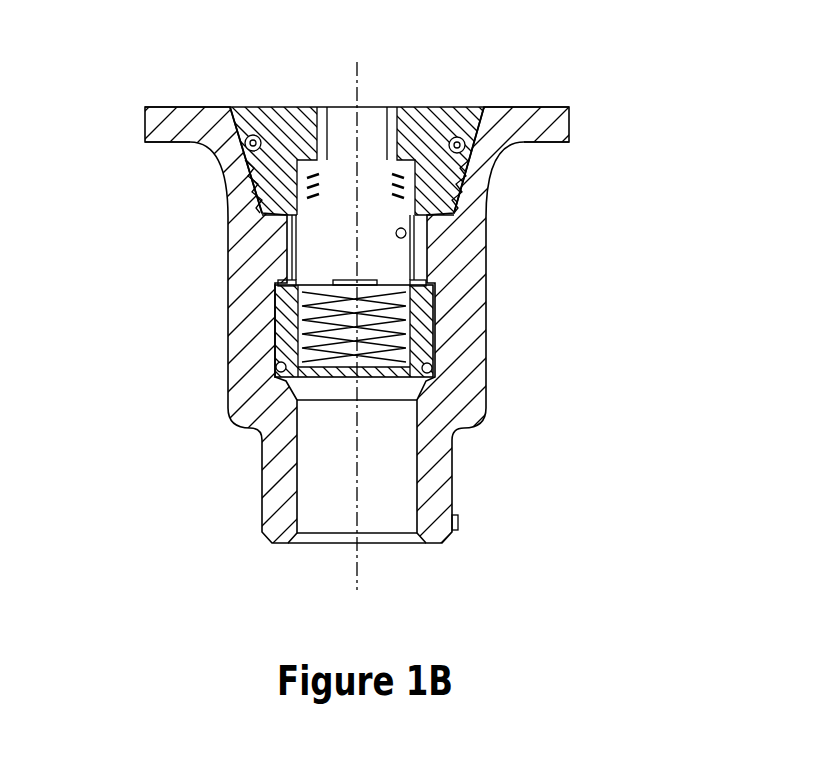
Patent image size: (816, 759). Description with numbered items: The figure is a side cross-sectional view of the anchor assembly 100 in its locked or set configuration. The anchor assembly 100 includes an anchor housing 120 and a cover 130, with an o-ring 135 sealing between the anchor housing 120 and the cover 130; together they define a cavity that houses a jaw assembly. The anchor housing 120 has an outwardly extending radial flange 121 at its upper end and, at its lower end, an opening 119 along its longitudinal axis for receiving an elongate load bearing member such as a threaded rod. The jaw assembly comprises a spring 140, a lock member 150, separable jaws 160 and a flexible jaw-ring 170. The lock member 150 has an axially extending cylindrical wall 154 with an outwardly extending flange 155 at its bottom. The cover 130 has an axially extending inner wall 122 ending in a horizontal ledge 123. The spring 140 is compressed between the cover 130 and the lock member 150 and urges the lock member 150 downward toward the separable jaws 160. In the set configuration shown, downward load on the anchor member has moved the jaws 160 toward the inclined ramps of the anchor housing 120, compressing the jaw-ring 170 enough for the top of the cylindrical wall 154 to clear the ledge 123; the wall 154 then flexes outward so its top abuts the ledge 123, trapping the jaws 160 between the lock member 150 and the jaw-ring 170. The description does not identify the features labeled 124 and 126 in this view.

The anchor assembly 100 is at (620, 113).
The opening 119 is at (383, 545).
The anchor housing 120 is at (470, 410).
The radial flange 121 is at (155, 125).
The inner wall 122 is at (313, 140).
The ledge 123 is at (278, 222).
The body wall 124 is at (242, 338).
The tab 126 is at (460, 522).
The cover 130 is at (424, 130).
The o-ring 135 is at (248, 150).
The spring 140 is at (305, 193).
The lock member 150 is at (410, 235).
The cylindrical wall 154 is at (415, 250).
The flange 155 is at (432, 290).
The separable jaws 160 is at (418, 320).
The jaw-ring 170 is at (432, 369).